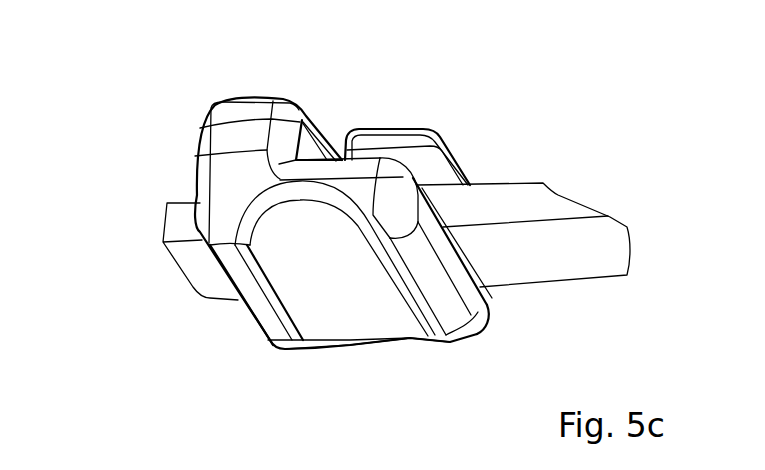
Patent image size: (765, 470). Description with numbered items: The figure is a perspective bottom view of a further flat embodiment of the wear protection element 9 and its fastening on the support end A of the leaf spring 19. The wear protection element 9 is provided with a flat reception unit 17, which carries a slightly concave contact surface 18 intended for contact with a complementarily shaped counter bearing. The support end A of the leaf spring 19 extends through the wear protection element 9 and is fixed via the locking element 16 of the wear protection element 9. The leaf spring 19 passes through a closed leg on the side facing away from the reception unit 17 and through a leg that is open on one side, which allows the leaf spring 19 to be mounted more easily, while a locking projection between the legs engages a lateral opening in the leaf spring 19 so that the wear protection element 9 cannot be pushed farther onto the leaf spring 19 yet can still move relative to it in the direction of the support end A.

The wear protection element 9 is at (268, 311).
The locking element 16 is at (331, 133).
The flat reception unit 17 is at (317, 280).
The contact surface 18 is at (353, 313).
The leaf spring 19 is at (523, 207).
The support end A is at (147, 203).